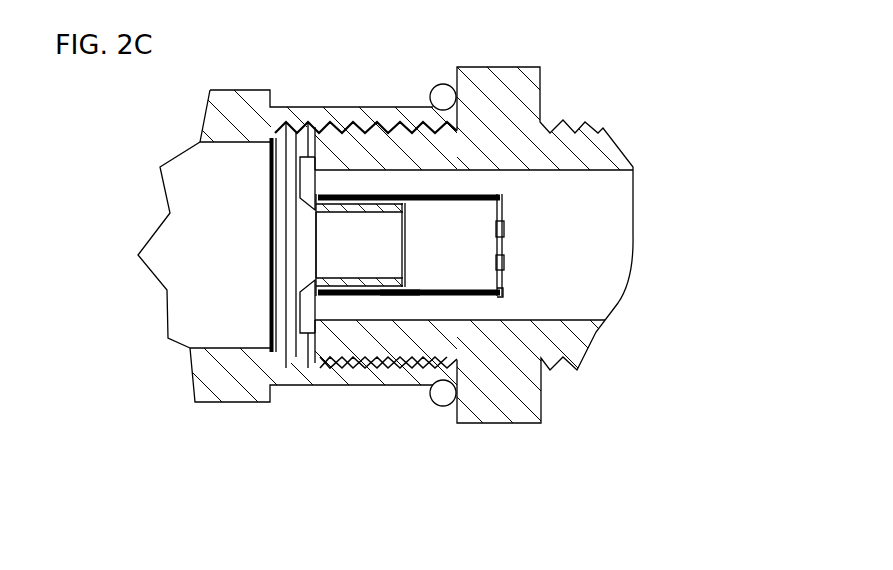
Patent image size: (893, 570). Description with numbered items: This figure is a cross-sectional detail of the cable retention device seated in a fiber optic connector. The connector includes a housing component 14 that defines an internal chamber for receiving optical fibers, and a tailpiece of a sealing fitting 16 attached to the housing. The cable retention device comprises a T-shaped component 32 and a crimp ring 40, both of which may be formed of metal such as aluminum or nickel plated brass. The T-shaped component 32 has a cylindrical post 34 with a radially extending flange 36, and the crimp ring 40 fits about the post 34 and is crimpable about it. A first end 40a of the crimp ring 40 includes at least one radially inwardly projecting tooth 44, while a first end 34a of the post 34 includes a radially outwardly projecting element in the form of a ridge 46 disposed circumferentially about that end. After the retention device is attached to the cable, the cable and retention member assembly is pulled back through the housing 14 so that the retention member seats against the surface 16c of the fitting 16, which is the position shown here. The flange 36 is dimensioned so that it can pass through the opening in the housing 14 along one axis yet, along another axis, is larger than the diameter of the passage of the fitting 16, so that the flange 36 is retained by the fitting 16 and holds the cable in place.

The housing component 14 is at (230, 117).
The sealing fitting 16 is at (522, 108).
The surface of the fitting 16c is at (317, 148).
The T-shaped component 32 is at (323, 240).
The cylindrical post 34 is at (353, 213).
The first end of the post 34a is at (400, 247).
The flange 36 is at (310, 183).
The crimp ring 40 is at (450, 297).
The first end of the crimp ring 40a is at (500, 297).
The radially inwardly projecting tooth 44 is at (503, 228).
The ridge 46 is at (401, 287).